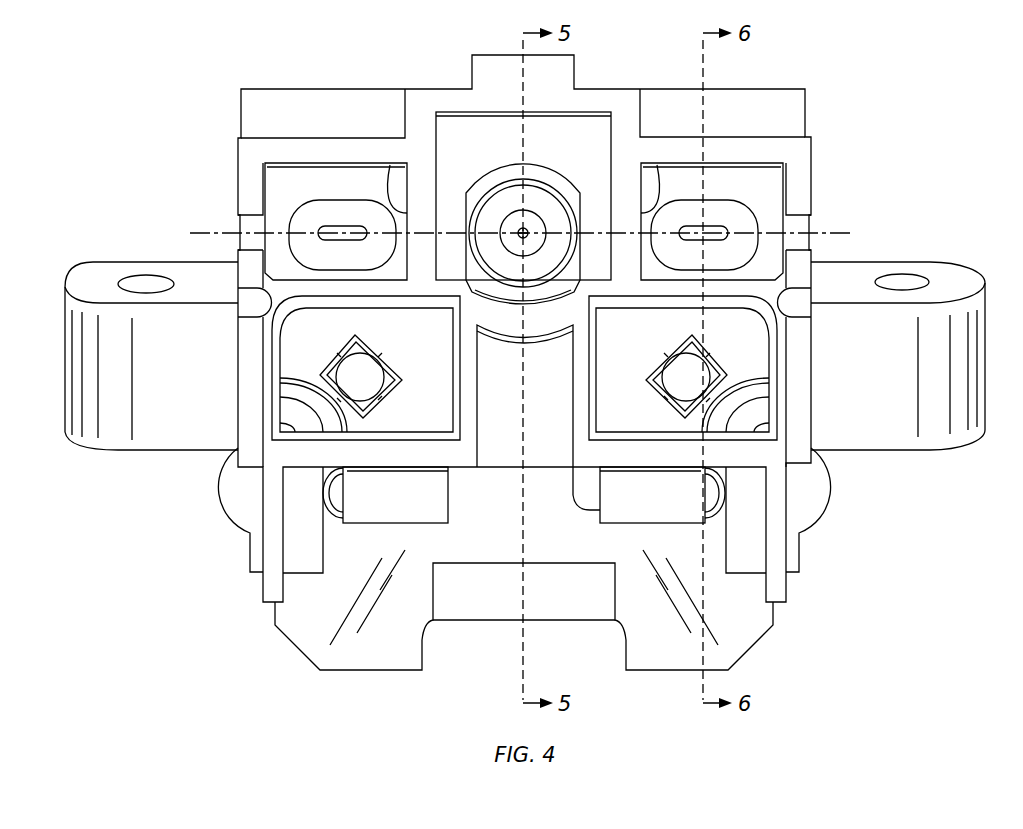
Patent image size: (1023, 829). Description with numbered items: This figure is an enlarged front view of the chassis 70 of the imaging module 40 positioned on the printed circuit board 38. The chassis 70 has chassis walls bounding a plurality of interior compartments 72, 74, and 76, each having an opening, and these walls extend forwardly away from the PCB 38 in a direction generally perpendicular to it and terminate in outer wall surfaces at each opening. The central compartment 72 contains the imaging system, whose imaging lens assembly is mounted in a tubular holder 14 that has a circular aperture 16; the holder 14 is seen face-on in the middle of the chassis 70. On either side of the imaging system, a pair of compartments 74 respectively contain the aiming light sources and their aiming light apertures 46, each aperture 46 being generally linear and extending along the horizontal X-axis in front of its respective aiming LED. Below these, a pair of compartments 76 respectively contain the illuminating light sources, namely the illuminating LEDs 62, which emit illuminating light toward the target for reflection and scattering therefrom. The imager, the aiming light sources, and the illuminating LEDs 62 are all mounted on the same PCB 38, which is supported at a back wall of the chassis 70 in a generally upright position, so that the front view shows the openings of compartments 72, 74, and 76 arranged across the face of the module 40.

The imaging module 40 is at (846, 68).
The compartment 72 is at (460, 123).
The compartments 74 is at (329, 173).
The aiming aperture 46 is at (348, 232).
The tubular holder 14 is at (486, 183).
The circular aperture 16 is at (528, 232).
The compartments 76 is at (433, 430).
The illuminating light emitting diode 62 is at (370, 368).
The chassis 70 is at (497, 452).
The printed circuit board 38 is at (362, 658).